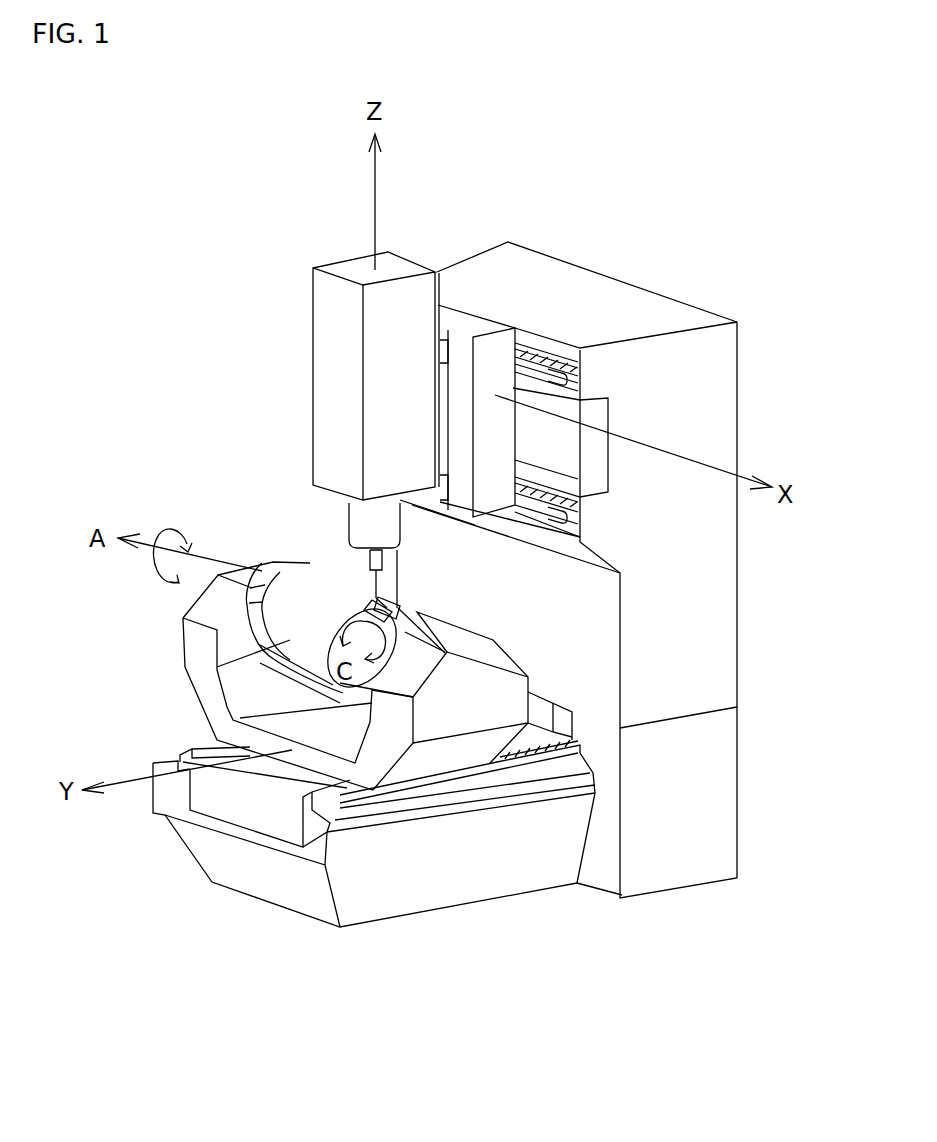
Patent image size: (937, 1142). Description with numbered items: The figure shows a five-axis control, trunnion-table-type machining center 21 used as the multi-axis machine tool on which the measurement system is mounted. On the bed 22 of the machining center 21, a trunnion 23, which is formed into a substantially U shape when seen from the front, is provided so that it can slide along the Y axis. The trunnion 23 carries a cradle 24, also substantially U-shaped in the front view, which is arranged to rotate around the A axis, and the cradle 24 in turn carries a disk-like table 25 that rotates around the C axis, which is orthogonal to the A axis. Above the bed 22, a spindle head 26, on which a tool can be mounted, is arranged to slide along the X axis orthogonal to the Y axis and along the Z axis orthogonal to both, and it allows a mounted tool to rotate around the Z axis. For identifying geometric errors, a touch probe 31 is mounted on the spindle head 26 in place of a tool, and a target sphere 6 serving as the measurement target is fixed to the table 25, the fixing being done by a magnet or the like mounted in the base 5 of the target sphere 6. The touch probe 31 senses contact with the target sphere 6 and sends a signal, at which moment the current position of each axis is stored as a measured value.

The machining center 21 is at (607, 260).
The bed 22 is at (478, 888).
The trunnion 23 is at (207, 692).
The cradle 24 is at (260, 628).
The table 25 is at (335, 694).
The spindle head 26 is at (327, 350).
The touch probe 31 is at (375, 595).
The base 5 is at (397, 598).
The target sphere 6 is at (370, 610).